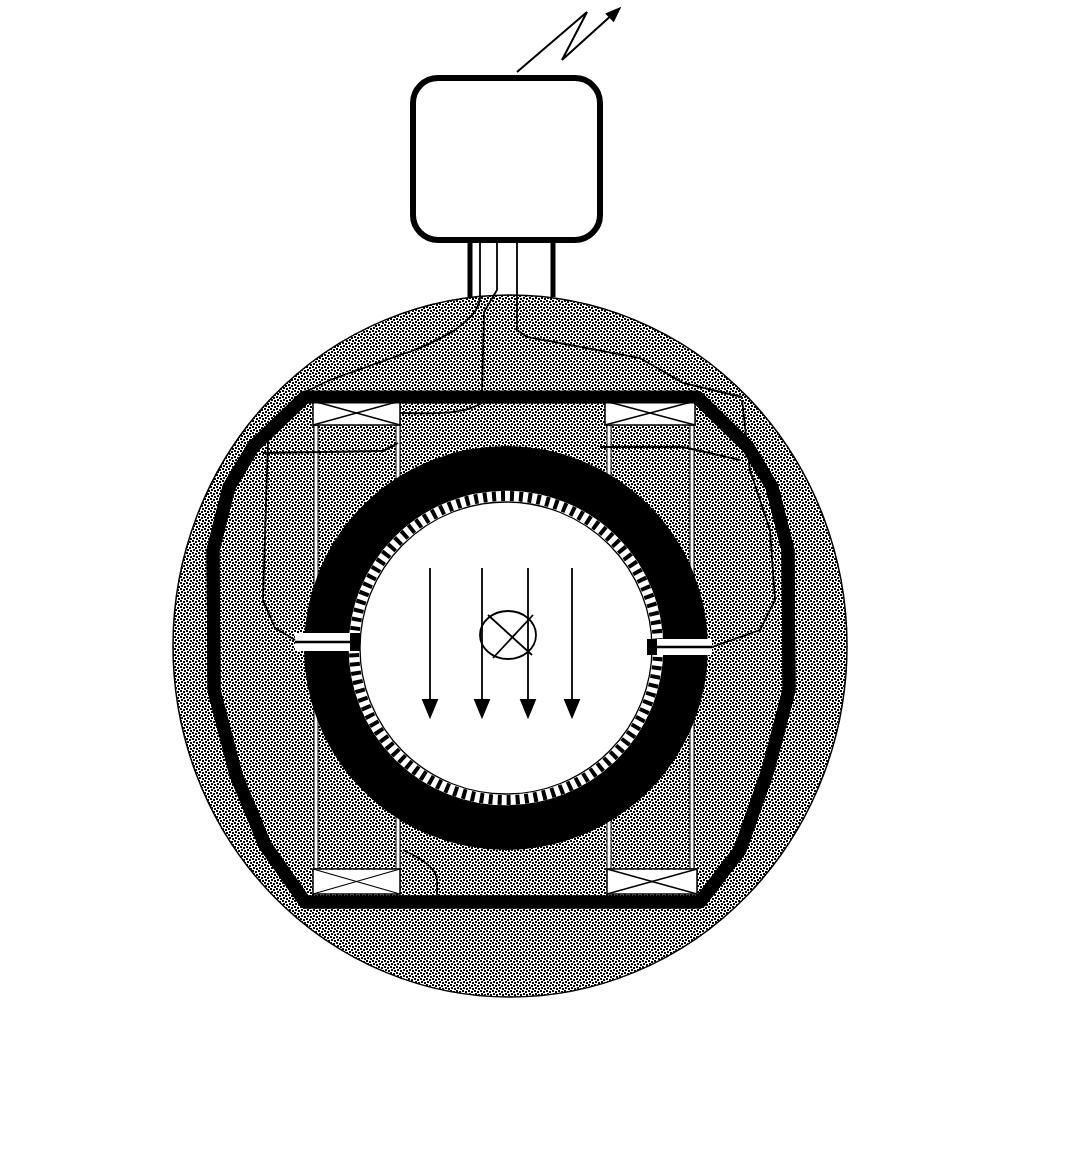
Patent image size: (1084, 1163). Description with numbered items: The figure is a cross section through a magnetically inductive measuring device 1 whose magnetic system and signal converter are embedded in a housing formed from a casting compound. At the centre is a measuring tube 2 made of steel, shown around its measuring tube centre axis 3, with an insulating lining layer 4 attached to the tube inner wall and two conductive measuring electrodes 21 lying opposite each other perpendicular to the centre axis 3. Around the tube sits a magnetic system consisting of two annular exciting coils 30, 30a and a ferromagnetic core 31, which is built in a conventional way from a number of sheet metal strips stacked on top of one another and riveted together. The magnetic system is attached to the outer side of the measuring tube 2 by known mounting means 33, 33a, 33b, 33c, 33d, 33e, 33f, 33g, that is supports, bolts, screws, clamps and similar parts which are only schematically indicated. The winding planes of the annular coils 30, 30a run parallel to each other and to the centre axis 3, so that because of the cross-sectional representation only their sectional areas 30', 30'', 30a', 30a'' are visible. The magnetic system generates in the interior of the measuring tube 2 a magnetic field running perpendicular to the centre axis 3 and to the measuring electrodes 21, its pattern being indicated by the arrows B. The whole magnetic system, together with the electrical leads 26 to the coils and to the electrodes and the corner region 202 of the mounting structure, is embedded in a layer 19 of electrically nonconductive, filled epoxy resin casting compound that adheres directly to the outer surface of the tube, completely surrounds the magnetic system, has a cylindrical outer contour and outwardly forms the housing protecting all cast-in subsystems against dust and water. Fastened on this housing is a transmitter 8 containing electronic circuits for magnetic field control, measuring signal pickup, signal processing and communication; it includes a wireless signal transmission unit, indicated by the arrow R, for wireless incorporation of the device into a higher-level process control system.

The magnetically inductive measuring device 1 is at (665, 1122).
The measuring tube 2 is at (703, 702).
The measuring tube centre axis 3 is at (500, 630).
The insulating lining layer 4 is at (293, 638).
The transmitter 8 is at (585, 130).
The layer of casting compound 19 is at (490, 937).
The measuring electrodes 21 is at (632, 642).
The connecting cables 26 is at (520, 330).
The annular exciting coil 30 is at (593, 553).
The sectional area of annular coil 30' is at (593, 553).
The sectional area of annular coil 30'' is at (593, 553).
The annular exciting coil 30a is at (526, 916).
The sectional area of annular coil 30a' is at (526, 916).
The sectional area of annular coil 30a'' is at (526, 916).
The ferromagnetic core 31 is at (202, 600).
The mounting means 33 is at (233, 443).
The mounting means 33a is at (217, 475).
The mounting means 33b is at (257, 858).
The mounting means 33c is at (437, 907).
The mounting means 33d is at (562, 908).
The mounting means 33e is at (697, 807).
The mounting means 33f is at (757, 463).
The mounting means 33g is at (690, 503).
The yoke corner section 202 is at (743, 387).
The magnetic field arrows B is at (501, 665).
The wireless signal transmission arrow R is at (568, 40).